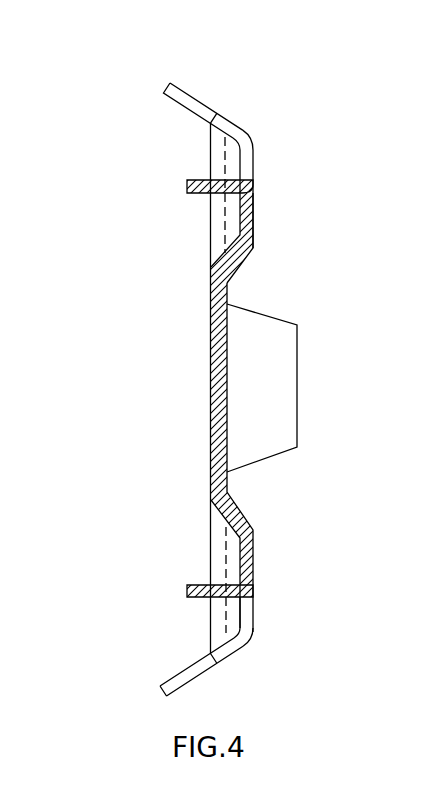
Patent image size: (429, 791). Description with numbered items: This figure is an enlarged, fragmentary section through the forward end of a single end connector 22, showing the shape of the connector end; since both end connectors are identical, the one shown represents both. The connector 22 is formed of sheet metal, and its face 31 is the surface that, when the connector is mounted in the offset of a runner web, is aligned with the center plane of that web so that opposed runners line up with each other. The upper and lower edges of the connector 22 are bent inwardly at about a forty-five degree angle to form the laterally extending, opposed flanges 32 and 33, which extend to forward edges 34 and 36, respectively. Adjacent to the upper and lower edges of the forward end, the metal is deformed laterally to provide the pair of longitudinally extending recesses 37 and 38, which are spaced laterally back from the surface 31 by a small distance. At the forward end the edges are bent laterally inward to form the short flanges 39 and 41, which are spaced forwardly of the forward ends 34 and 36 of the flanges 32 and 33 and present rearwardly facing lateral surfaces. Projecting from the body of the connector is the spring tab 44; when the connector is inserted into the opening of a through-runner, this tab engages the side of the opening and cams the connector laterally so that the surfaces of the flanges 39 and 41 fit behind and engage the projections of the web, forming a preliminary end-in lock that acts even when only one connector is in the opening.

The end connector 22 is at (259, 159).
The face 31 is at (211, 423).
The upper flange 32 is at (223, 118).
The lower flange 33 is at (222, 660).
The forward edge 34 is at (242, 128).
The forward edge 36 is at (242, 642).
The recess 37 is at (240, 215).
The recess 38 is at (240, 605).
The short flange 39 is at (193, 180).
The short flange 41 is at (198, 583).
The spring tab 44 is at (275, 393).